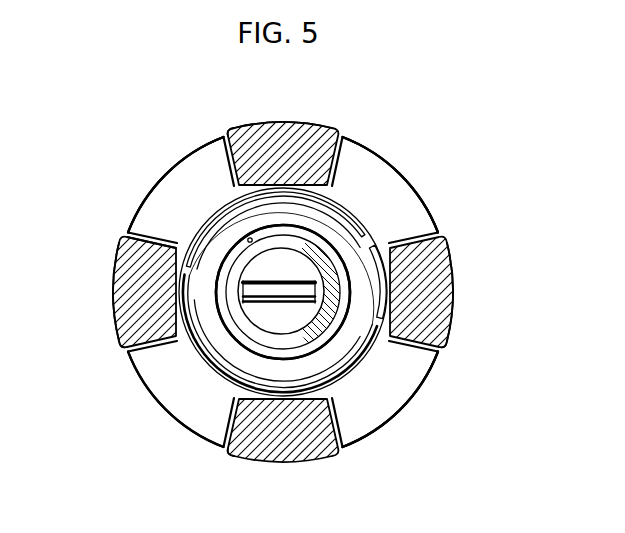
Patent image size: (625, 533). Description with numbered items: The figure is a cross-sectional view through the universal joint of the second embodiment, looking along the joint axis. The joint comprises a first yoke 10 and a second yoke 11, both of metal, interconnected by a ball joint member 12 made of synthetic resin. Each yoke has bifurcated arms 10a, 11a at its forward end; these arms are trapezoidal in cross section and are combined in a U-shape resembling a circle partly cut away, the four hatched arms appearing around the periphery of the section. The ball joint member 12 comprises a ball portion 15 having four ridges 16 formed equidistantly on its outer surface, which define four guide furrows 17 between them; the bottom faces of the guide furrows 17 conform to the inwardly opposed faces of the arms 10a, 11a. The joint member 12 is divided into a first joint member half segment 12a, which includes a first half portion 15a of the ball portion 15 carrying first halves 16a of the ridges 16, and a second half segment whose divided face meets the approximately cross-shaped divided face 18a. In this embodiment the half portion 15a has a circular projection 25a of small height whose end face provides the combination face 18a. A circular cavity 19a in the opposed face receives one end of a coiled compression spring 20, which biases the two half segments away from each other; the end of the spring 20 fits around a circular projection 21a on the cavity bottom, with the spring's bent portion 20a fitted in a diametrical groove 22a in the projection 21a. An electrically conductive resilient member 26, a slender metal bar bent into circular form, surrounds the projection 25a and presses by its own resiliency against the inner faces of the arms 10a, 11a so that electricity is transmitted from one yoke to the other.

The first yoke 10 is at (447, 263).
The arms of the first yoke 10a is at (452, 292).
The second yoke 11 is at (324, 121).
The arms of the second yoke 11a is at (284, 121).
The ball joint member 12 is at (410, 170).
The first joint member half segment 12a is at (160, 164).
The ball portion 15 is at (125, 276).
The first half portion 15a is at (123, 340).
The ridges 16 is at (367, 147).
The first halves of the ridges 16a is at (209, 140).
The guide furrows 17 is at (248, 150).
The divided face of first half segment 18a is at (215, 337).
The circular cavity 19a is at (250, 240).
The coiled compression spring 20 is at (333, 257).
The bent portion of the spring 20a is at (278, 294).
The circular projection 21a is at (291, 262).
The diametrical groove 22a is at (316, 298).
The circular projection of small height 25a is at (215, 246).
The electrically conductive resilient member 26 is at (335, 382).